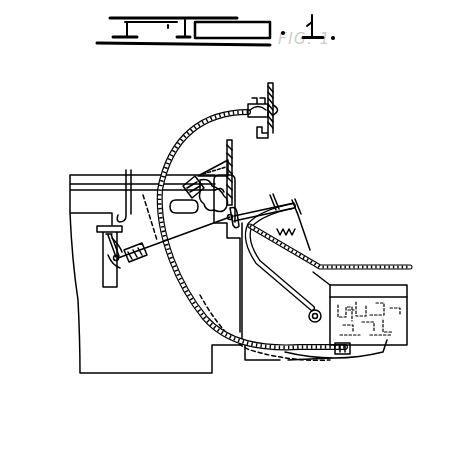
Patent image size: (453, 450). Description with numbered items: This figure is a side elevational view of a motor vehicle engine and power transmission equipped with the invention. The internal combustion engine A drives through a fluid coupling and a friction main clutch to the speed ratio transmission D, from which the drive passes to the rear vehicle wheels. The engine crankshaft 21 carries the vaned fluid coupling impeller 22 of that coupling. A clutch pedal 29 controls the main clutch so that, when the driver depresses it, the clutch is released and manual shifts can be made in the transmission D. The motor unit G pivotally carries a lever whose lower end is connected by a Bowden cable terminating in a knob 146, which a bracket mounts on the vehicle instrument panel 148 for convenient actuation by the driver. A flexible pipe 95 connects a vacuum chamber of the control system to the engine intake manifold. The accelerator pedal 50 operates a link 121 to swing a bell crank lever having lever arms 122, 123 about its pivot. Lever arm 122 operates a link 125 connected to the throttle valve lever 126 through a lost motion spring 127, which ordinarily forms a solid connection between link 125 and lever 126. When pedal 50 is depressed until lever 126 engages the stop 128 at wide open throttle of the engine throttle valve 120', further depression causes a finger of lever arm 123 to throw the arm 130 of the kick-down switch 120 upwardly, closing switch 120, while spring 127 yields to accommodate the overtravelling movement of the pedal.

The internal combustion engine A is at (89, 171).
The speed ratio transmission D is at (376, 282).
The motor unit G is at (408, 307).
The engine crankshaft 21 is at (452, 220).
The fluid coupling impeller 22 is at (452, 122).
The clutch pedal 29 is at (302, 210).
The accelerator pedal 50 is at (277, 200).
The flexible pipe 95 is at (352, 362).
The kick-down switch 120 is at (205, 176).
The engine throttle valve 120' is at (76, 228).
The link 121 is at (251, 216).
The lever arm 122 is at (235, 242).
The lever arm 123 is at (240, 170).
The link 125 is at (208, 231).
The throttle valve lever 126 is at (105, 260).
The lost motion spring 127 is at (134, 262).
The stop 128 is at (105, 262).
The switch arm 130 is at (188, 206).
The knob 146 is at (282, 110).
The instrument panel 148 is at (273, 93).